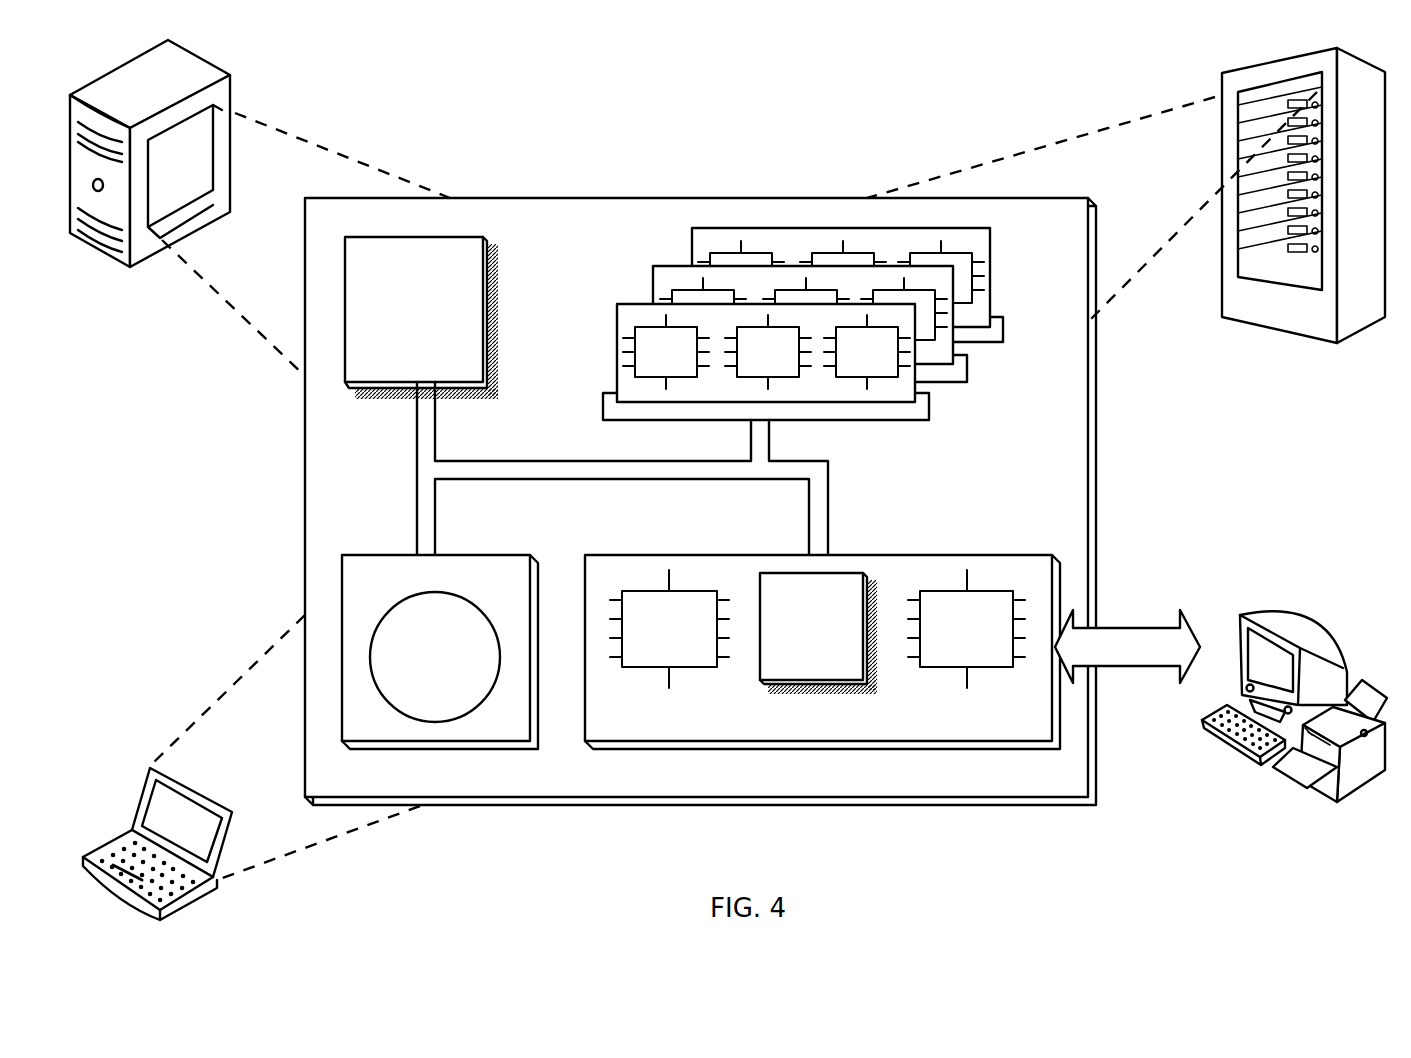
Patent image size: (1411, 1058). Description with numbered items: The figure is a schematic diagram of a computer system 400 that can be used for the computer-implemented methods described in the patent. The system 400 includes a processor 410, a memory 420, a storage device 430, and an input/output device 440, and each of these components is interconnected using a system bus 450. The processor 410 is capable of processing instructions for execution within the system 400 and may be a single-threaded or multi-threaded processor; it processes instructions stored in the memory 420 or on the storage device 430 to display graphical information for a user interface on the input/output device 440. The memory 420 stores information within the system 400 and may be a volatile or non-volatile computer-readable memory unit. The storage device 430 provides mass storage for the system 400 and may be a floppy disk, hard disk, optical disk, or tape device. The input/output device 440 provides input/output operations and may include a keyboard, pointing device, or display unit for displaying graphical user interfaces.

The computer system 400 is at (700, 501).
The processor 410 is at (421, 318).
The memory 420 is at (1001, 383).
The storage device 430 is at (440, 652).
The input/output device 440 is at (1240, 618).
The system bus 450 is at (620, 461).